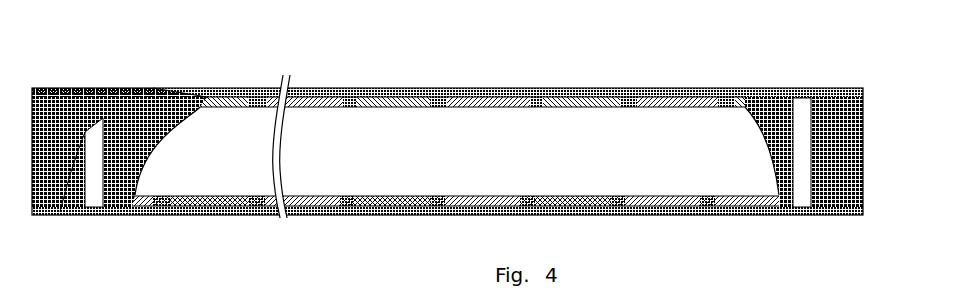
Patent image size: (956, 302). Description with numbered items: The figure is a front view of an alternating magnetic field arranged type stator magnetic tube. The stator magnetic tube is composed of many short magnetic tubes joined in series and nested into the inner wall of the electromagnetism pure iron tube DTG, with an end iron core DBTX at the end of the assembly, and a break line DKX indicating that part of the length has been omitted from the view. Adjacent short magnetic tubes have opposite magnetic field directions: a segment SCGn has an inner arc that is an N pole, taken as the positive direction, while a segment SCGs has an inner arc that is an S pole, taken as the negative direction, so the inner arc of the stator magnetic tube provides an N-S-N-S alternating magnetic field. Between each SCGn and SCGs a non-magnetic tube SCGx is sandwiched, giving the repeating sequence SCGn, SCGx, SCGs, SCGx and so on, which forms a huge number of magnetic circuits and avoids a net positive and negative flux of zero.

The stator magnetic tube with S inner arc SCGs is at (302, 93).
The stator magnetic tube with N inner arc SCGn is at (393, 93).
The non-magnetic tube SCGx is at (710, 216).
The pure iron tube DTG is at (55, 216).
The break line DKX is at (281, 219).
The end iron core DBTX is at (838, 216).